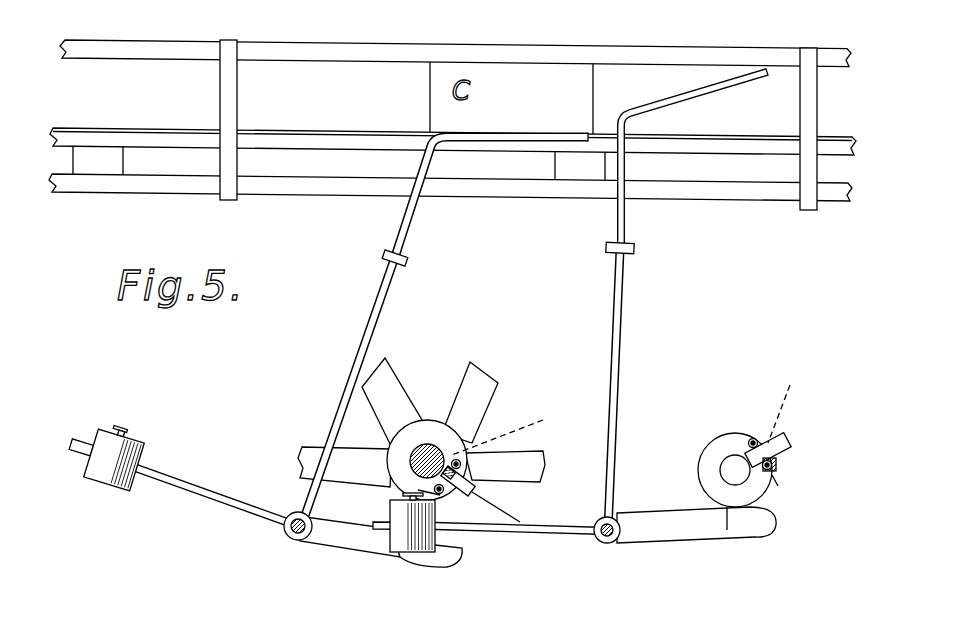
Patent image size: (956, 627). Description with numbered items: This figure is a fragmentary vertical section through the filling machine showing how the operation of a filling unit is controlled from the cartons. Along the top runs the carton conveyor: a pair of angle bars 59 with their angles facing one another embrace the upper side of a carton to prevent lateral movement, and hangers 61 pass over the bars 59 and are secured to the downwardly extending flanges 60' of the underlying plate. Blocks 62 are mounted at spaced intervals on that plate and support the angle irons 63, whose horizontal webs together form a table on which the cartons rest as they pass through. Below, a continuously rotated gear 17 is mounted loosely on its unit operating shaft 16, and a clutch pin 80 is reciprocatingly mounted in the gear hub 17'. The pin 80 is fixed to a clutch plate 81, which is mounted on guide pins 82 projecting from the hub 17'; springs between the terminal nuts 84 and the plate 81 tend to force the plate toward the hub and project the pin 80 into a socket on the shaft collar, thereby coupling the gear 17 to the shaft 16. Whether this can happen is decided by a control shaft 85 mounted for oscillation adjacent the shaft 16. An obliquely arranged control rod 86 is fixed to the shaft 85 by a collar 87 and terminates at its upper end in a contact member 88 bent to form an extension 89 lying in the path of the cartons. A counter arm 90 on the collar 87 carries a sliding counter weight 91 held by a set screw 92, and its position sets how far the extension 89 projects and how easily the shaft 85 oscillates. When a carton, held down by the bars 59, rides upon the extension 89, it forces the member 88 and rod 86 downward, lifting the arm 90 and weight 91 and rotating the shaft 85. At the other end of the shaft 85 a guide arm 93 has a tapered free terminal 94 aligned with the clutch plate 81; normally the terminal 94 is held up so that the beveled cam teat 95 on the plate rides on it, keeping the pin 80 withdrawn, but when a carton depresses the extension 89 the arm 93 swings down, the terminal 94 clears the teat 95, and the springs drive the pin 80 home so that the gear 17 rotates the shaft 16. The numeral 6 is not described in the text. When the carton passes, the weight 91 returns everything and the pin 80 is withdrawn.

The angle bars 59 is at (323, 53).
The downwardly extending flanges 60' is at (450, 218).
The hangers 61 is at (230, 60).
The blocks 62 is at (102, 162).
The angle irons 63 is at (793, 148).
The fan blade 6 is at (370, 426).
The unit operating shaft 16 is at (432, 455).
The gear 17 is at (518, 418).
The gear hub 17' is at (518, 458).
The clutch pin 80 is at (631, 414).
The clutch plate 81 is at (455, 490).
The guide pins 82 is at (460, 460).
The terminal nuts 84 is at (468, 458).
The control shaft 85 is at (295, 535).
The control rod 86 is at (387, 288).
The collar 87 is at (305, 537).
The contact member 88 is at (397, 215).
The extension 89 is at (527, 140).
The counter arm 90 is at (233, 503).
The counter weight 91 is at (108, 477).
The set screw 92 is at (132, 432).
The guide arm 93 is at (377, 550).
The free terminal 94 is at (443, 553).
The cam teat 95 is at (472, 488).